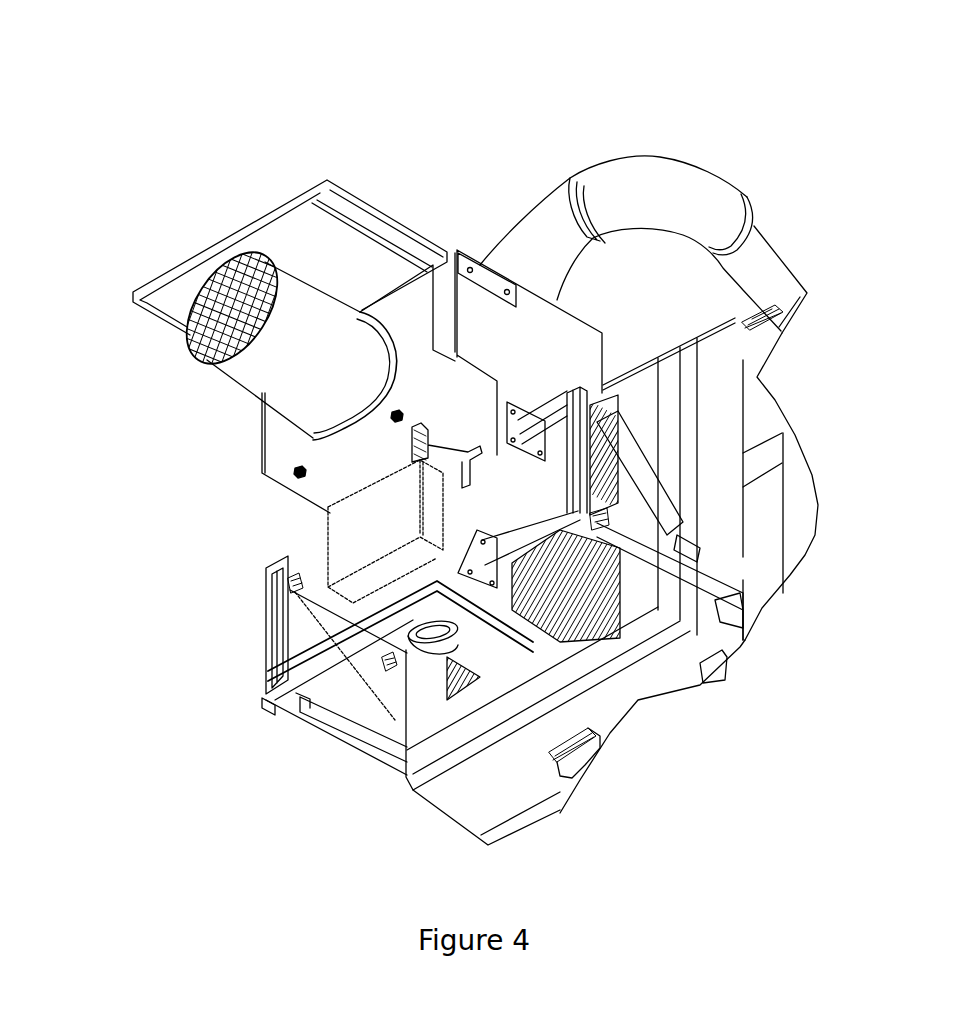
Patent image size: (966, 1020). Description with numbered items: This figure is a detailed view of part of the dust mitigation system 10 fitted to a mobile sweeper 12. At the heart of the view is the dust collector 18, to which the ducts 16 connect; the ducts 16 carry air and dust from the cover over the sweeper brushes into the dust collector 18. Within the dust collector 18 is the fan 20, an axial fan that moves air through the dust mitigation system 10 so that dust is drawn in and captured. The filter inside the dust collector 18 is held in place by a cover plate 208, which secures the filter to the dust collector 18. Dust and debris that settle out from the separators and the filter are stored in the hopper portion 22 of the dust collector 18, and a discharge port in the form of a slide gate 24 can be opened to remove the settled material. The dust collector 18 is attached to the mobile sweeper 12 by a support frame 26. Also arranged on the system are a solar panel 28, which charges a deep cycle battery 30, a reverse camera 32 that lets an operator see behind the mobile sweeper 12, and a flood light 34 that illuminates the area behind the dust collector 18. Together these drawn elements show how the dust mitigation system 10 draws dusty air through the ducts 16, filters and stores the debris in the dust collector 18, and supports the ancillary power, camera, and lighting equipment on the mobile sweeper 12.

The dust mitigation system 10 is at (378, 112).
The mobile sweeper 12 is at (743, 530).
The ducts 16 is at (678, 182).
The dust collector 18 is at (475, 303).
The fan 20 is at (290, 413).
The hopper portion 22 is at (390, 593).
The slide gate 24 is at (350, 733).
The support frame 26 is at (266, 703).
The solar panel 28 is at (128, 290).
The deep cycle battery 30 is at (267, 663).
The reverse camera 32 is at (298, 478).
The flood light 34 is at (268, 592).
The cover plate 208 is at (488, 277).